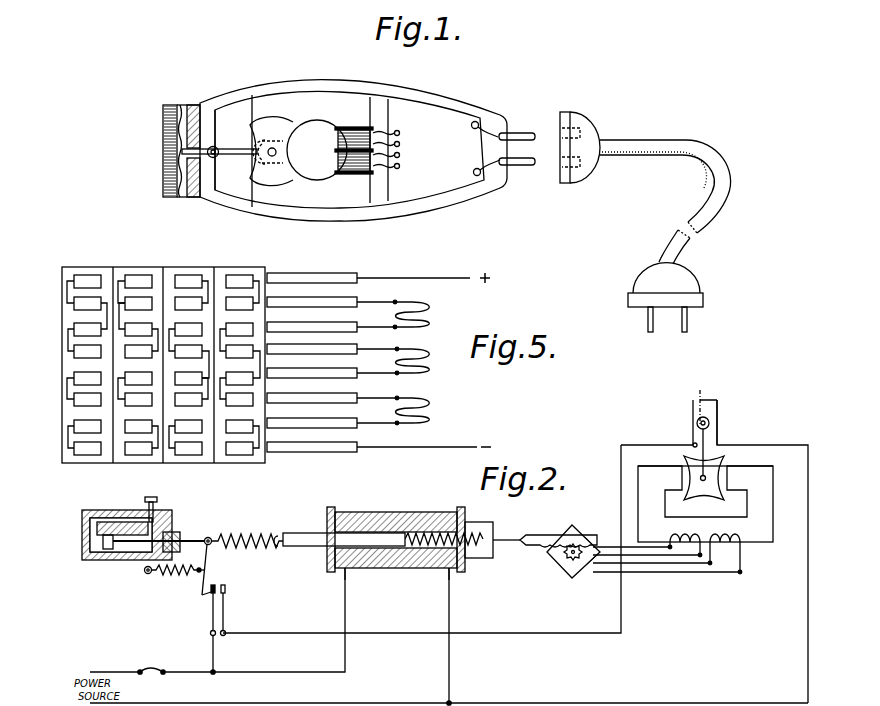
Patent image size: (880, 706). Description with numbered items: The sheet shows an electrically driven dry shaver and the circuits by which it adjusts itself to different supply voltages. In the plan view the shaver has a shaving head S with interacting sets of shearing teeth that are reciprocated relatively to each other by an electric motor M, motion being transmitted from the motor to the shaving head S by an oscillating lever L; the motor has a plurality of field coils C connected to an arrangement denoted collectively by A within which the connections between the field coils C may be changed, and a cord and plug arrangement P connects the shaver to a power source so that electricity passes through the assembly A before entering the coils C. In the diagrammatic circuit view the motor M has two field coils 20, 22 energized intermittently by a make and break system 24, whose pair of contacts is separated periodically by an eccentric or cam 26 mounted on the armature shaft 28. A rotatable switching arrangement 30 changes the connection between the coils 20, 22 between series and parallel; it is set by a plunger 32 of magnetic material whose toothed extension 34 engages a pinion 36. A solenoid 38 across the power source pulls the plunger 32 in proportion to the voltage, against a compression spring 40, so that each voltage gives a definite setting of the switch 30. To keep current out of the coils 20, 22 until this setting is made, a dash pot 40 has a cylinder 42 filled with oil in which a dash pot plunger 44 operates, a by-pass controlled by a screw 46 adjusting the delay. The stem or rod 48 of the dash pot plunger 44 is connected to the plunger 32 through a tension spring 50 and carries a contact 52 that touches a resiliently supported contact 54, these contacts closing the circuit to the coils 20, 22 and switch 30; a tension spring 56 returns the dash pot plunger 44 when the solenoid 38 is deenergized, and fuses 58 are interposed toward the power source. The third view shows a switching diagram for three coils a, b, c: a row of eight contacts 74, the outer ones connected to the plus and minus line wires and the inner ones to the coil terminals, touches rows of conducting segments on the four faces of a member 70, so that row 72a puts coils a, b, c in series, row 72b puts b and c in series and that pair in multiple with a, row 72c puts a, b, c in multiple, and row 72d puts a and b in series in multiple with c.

In FIG. 1, the shaving head S is at (170, 104).
In FIG. 1, the oscillating lever L is at (218, 147).
In FIG. 1, the electric motor M is at (319, 104).
In FIG. 2, the electric motor M is at (647, 470).
In FIG. 1, the field coils C is at (352, 128).
In FIG. 1, the connection-changing arrangement A is at (452, 117).
In FIG. 2, the connection-changing arrangement A is at (313, 524).
In FIG. 1, the cord and plug arrangement P is at (582, 122).
In FIG. 5, the member 70 is at (62, 368).
In FIG. 5, the first row of terminals 72a is at (91, 275).
In FIG. 5, the second row of terminals 72b is at (130, 275).
In FIG. 5, the third row of segments 72c is at (181, 275).
In FIG. 5, the fourth row of segments 72d is at (232, 275).
In FIG. 5, the contacts 74 is at (332, 273).
In FIG. 5, the coil a is at (428, 310).
In FIG. 5, the coil b is at (430, 371).
In FIG. 5, the coil c is at (430, 412).
In FIG. 2, the field coil 20 is at (686, 548).
In FIG. 2, the field coil 22 is at (740, 550).
In FIG. 2, the make and break system 24 is at (720, 406).
In FIG. 2, the eccentric or cam 26 is at (697, 423).
In FIG. 2, the armature shaft 28 is at (710, 478).
In FIG. 2, the switching arrangement 30 is at (566, 576).
In FIG. 2, the plunger 32 is at (348, 570).
In FIG. 2, the extension 34 is at (545, 535).
In FIG. 2, the pinion 36 is at (563, 560).
In FIG. 2, the solenoid 38 is at (394, 512).
In FIG. 2, the compression spring 40 is at (80, 540).
In FIG. 2, the cylinder 42 is at (93, 514).
In FIG. 2, the dash pot plunger 44 is at (106, 556).
In FIG. 2, the screw 46 is at (156, 506).
In FIG. 2, the stem or rod 48 is at (192, 538).
In FIG. 2, the tension spring 50 is at (244, 538).
In FIG. 2, the contact 52 is at (216, 588).
In FIG. 2, the resiliently supported contact 54 is at (227, 592).
In FIG. 2, the tension spring 56 is at (170, 580).
In FIG. 2, the fuses 58 is at (153, 669).